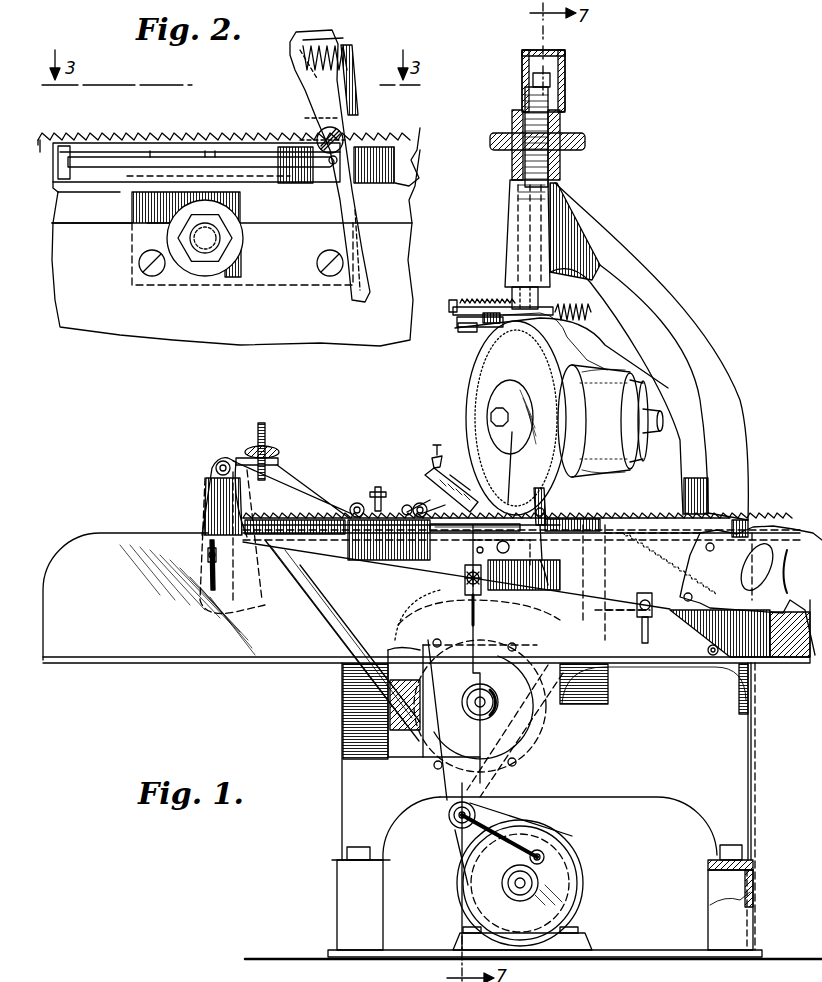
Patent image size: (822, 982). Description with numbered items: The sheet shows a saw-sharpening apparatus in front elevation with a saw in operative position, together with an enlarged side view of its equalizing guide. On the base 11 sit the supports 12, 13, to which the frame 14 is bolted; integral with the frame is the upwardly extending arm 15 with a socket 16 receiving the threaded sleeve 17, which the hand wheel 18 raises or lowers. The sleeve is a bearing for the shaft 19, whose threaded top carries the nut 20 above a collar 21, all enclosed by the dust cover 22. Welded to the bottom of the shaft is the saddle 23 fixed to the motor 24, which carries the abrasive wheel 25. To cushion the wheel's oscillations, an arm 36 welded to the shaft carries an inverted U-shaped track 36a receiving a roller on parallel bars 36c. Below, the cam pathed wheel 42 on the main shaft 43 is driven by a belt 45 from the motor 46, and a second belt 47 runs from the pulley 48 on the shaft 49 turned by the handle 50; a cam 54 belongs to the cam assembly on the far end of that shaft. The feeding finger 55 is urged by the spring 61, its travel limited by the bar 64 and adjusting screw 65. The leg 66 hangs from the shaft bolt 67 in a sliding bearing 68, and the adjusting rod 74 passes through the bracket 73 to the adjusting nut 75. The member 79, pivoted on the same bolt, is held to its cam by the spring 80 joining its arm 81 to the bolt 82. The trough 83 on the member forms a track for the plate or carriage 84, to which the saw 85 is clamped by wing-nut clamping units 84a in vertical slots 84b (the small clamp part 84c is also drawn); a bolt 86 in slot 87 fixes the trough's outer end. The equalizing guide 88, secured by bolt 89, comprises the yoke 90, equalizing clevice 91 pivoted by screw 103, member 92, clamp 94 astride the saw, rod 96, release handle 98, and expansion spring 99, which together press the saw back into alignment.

In FIG. 1, the base 11 is at (632, 953).
In FIG. 1, the support 12 is at (337, 888).
In FIG. 1, the support 13 is at (755, 897).
In FIG. 1, the frame 14 is at (548, 806).
In FIG. 1, the upwardly extending arm 15 is at (695, 318).
In FIG. 1, the socket 16 is at (514, 170).
In FIG. 1, the sleeve 17 is at (560, 170).
In FIG. 1, the hand wheel 18 is at (582, 136).
In FIG. 1, the shaft 19 is at (520, 232).
In FIG. 1, the nut 20 is at (552, 80).
In FIG. 1, the collar 21 is at (527, 88).
In FIG. 1, the dust cover 22 is at (565, 52).
In FIG. 1, the saddle 23 is at (580, 345).
In FIG. 1, the motor 24 is at (610, 463).
In FIG. 1, the abrasive wheel 25 is at (472, 369).
In FIG. 1, the arm 36 is at (476, 306).
In FIG. 1, the inverted U-shaped track 36a is at (456, 311).
In FIG. 1, the parallel bars 36c is at (466, 328).
In FIG. 1, the cam pathed wheel 42 is at (405, 745).
In FIG. 1, the main shaft 43 is at (475, 700).
In FIG. 1, the belt 45 is at (452, 857).
In FIG. 1, the motor 46 is at (560, 880).
In FIG. 1, the belt 47 is at (517, 783).
In FIG. 1, the pulley 48 is at (455, 833).
In FIG. 1, the shaft 49 is at (452, 817).
In FIG. 1, the handle 50 is at (513, 840).
In FIG. 1, the cam 54 is at (492, 715).
In FIG. 1, the feeding finger 55 is at (452, 480).
In FIG. 1, the spring 61 is at (441, 455).
In FIG. 1, the bar 64 is at (396, 515).
In FIG. 1, the adjusting screw 65 is at (378, 487).
In FIG. 1, the leg 66 is at (340, 675).
In FIG. 1, the shaft bolt 67 is at (216, 470).
In FIG. 1, the bearing 68 is at (210, 465).
In FIG. 1, the bracket 73 is at (280, 466).
In FIG. 1, the adjusting rod 74 is at (266, 430).
In FIG. 1, the adjusting nut 75 is at (280, 452).
In FIG. 1, the member 79 is at (575, 620).
In FIG. 1, the spring 80 is at (640, 572).
In FIG. 1, the arm 81 is at (618, 614).
In FIG. 1, the bolt 82 is at (627, 530).
In FIG. 1, the trough 83 is at (150, 663).
In FIG. 1, the plate or carriage 84 is at (265, 660).
In FIG. 1, the wing-nut clamping units 84a is at (638, 598).
In FIG. 1, the vertical slots 84b is at (465, 580).
In FIG. 1, the clamp knob 84c is at (482, 578).
In FIG. 2, the saw 85 is at (422, 140).
In FIG. 1, the saw 85 is at (425, 563).
In FIG. 1, the bolt 86 is at (207, 553).
In FIG. 1, the slot 87 is at (210, 572).
In FIG. 2, the equalizing guide 88 is at (128, 212).
In FIG. 1, the equalizing guide 88 is at (470, 532).
In FIG. 2, the bolt 89 is at (205, 254).
In FIG. 1, the bolt 89 is at (500, 553).
In FIG. 2, the yoke 90 is at (353, 124).
In FIG. 1, the yoke 90 is at (548, 514).
In FIG. 2, the equalizing clevice 91 is at (333, 37).
In FIG. 1, the equalizing clevice 91 is at (546, 505).
In FIG. 2, the member 92 is at (145, 157).
In FIG. 2, the clamp 94 is at (103, 147).
In FIG. 2, the rod 96 is at (241, 160).
In FIG. 2, the release handle 98 is at (358, 254).
In FIG. 1, the release handle 98 is at (548, 560).
In FIG. 2, the expansion spring 99 is at (352, 44).
In FIG. 2, the screw 103 is at (408, 157).